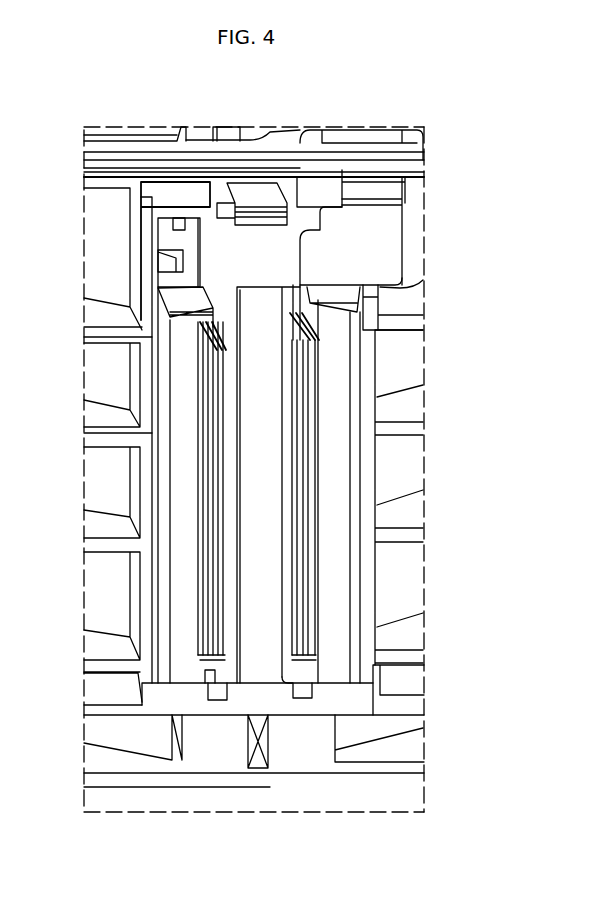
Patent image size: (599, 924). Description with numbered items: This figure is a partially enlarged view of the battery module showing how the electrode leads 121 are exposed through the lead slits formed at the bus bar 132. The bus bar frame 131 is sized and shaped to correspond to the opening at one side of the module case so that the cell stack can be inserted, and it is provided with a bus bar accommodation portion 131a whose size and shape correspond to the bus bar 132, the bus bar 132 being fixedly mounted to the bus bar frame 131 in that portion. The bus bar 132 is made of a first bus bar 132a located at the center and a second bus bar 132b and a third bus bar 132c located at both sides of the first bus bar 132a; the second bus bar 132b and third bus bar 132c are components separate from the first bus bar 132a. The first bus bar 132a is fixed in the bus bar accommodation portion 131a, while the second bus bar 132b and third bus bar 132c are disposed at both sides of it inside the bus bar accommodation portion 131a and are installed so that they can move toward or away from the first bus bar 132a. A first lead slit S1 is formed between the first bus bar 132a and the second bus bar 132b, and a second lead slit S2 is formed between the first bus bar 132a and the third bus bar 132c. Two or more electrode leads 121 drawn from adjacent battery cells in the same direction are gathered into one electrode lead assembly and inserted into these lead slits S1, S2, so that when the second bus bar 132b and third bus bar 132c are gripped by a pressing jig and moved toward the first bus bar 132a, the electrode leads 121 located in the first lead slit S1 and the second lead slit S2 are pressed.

The bus bar frame 131 is at (183, 162).
The bus bar accommodation portion 131a is at (152, 366).
The bus bar 132 is at (368, 856).
The first bus bar 132a is at (260, 660).
The second bus bar 132b is at (180, 667).
The third bus bar 132c is at (338, 660).
The electrode lead 121 is at (203, 613).
The first lead slit S1 is at (203, 485).
The second lead slit S2 is at (305, 410).